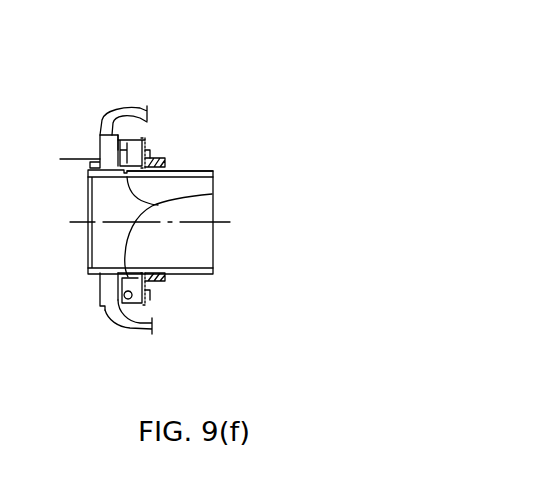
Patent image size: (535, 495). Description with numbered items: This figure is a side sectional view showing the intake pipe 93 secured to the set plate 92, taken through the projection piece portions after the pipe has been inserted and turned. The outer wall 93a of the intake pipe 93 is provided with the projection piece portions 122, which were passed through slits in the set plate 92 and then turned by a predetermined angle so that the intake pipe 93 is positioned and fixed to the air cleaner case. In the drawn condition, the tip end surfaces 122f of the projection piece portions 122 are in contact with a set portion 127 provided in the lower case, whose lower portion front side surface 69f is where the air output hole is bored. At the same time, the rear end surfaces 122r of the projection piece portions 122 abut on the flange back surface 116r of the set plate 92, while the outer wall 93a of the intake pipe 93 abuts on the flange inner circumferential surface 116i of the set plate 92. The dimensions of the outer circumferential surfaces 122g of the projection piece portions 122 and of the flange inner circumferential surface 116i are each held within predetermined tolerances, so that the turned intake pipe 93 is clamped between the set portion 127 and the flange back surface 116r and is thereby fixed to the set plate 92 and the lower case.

The intake pipe 93 is at (216, 158).
The outer wall 93a is at (168, 168).
The flange back surface 116r is at (212, 194).
The set portion 127 is at (98, 150).
The lower portion front side surface 69f is at (82, 159).
The tip end surfaces 122f is at (99, 128).
The flange inner circumferential surface 116i is at (148, 134).
The outer circumferential surfaces 122g is at (146, 140).
The rear end surfaces 122r is at (150, 150).
The projection piece portions 122 is at (160, 160).
The set plate 92 is at (160, 131).